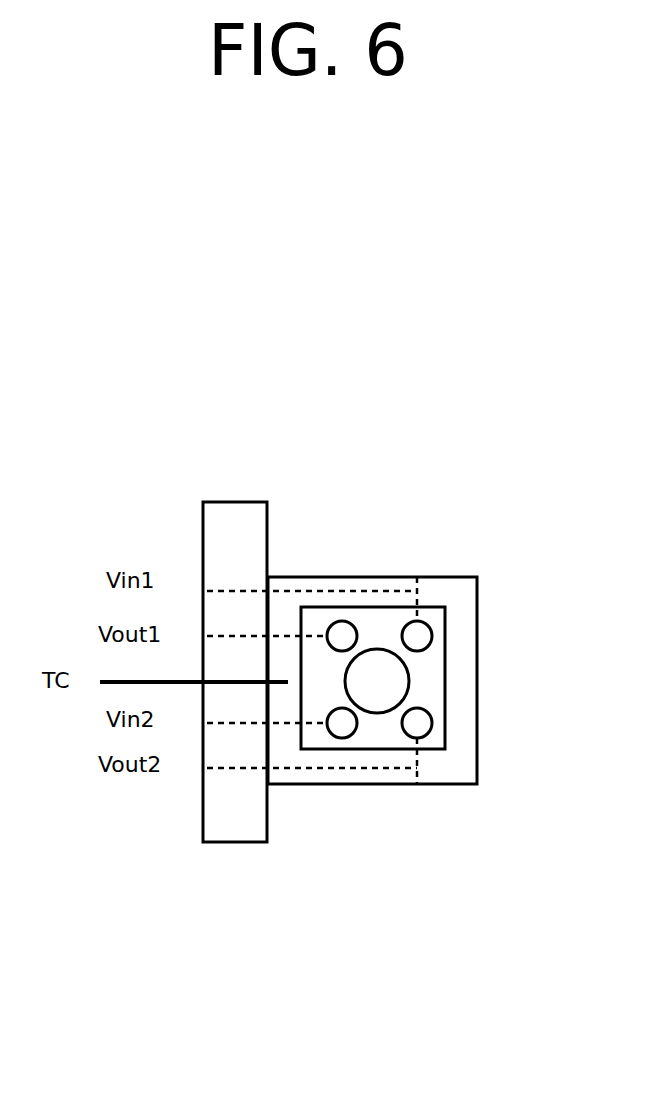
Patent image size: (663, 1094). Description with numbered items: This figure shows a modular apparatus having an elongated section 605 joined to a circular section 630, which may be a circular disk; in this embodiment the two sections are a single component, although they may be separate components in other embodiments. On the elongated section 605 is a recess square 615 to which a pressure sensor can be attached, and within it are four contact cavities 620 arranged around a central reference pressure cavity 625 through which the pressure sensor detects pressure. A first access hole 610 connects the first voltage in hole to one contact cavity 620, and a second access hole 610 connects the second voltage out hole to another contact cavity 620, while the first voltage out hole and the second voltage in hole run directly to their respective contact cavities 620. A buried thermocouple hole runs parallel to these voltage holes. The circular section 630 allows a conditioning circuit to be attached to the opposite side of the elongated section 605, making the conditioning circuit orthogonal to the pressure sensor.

The elongated section 605 is at (334, 562).
The access hole 610 is at (431, 566).
The recess square 615 is at (456, 694).
The contact cavity 620 is at (444, 624).
The reference pressure cavity 625 is at (366, 728).
The circular section 630 is at (224, 855).